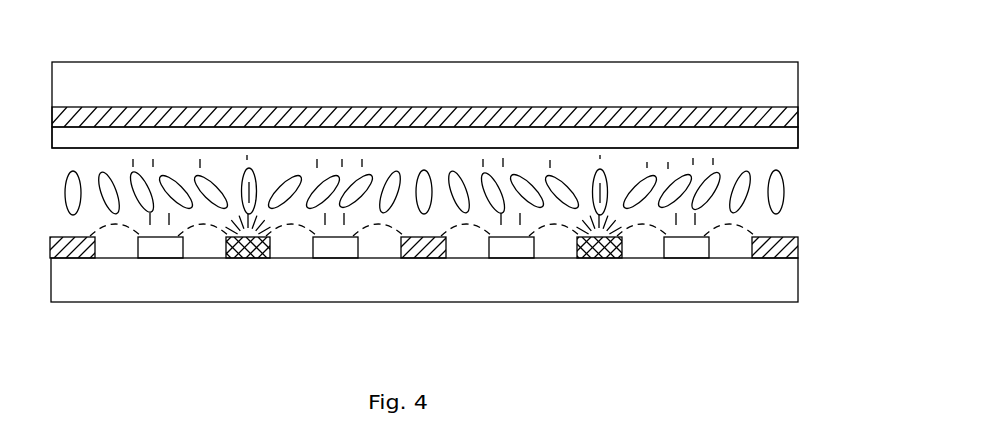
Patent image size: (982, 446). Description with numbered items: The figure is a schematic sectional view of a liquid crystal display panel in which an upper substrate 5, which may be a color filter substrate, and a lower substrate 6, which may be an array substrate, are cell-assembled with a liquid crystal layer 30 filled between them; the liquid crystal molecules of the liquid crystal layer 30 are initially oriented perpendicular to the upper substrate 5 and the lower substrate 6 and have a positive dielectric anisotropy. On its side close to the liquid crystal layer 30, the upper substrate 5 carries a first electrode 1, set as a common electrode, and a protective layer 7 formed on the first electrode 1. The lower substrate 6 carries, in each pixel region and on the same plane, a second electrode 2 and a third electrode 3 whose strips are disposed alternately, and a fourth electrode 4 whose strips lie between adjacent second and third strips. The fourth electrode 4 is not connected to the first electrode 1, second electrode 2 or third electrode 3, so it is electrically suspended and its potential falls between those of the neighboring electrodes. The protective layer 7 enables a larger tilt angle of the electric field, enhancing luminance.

The first electrode 1 is at (797, 115).
The second electrode 2 is at (797, 245).
The third electrode 3 is at (593, 258).
The fourth electrode 4 is at (332, 258).
The upper substrate 5 is at (416, 105).
The lower substrate 6 is at (416, 280).
The protective layer 7 is at (797, 138).
The liquid crystal layer 30 is at (783, 192).